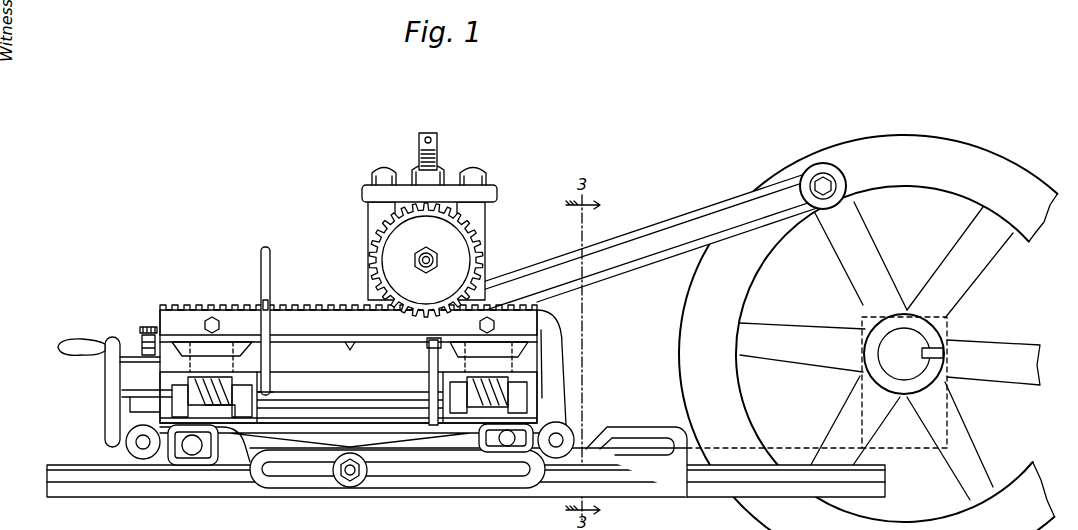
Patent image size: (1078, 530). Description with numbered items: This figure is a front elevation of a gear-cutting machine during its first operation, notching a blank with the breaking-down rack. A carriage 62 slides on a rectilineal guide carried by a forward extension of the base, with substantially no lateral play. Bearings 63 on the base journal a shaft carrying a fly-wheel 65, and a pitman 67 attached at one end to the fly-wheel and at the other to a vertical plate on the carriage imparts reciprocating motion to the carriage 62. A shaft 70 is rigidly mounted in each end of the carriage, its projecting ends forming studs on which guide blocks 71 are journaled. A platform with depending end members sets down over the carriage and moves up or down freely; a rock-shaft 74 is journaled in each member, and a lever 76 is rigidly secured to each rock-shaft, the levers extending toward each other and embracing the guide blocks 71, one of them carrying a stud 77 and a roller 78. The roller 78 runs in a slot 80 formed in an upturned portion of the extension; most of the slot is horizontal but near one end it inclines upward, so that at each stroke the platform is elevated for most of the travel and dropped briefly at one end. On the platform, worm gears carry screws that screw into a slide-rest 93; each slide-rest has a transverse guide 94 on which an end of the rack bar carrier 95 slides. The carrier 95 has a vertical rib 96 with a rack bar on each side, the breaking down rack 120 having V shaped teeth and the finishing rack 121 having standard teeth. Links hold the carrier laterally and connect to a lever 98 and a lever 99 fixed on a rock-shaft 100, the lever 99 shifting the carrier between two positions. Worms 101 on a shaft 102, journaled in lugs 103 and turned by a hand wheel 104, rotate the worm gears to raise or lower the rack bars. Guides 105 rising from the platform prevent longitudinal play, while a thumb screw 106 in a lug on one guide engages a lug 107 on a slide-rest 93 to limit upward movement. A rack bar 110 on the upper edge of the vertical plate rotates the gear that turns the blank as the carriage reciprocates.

The carriage 62 is at (300, 436).
The bearings 63 is at (862, 372).
The fly-wheel 65 is at (947, 157).
The pitman 67 is at (660, 240).
The shaft 70 is at (178, 455).
The guide blocks 71 is at (198, 462).
The rock-shaft 74 is at (125, 437).
The lever 76 is at (226, 462).
The stud 77 is at (345, 480).
The roller 78 is at (360, 478).
The slot 80 is at (466, 472).
The slide-rest 93 is at (222, 340).
The guide 94 is at (233, 350).
The rack bar carrier 95 is at (162, 330).
The vertical rib 96 is at (348, 320).
The lever 98 is at (429, 373).
The lever 99 is at (270, 375).
The rock-shaft 100 is at (306, 412).
The worms 101 is at (205, 410).
The shaft 102 is at (135, 392).
The lugs 103 is at (140, 398).
The hand wheel 104 is at (110, 378).
The guides 105 is at (148, 326).
The thumb screw 106 is at (140, 329).
The lug 107 is at (140, 361).
The rack bar 110 is at (247, 300).
The breaking down rack 120 is at (325, 302).
The finishing rack 121 is at (283, 302).